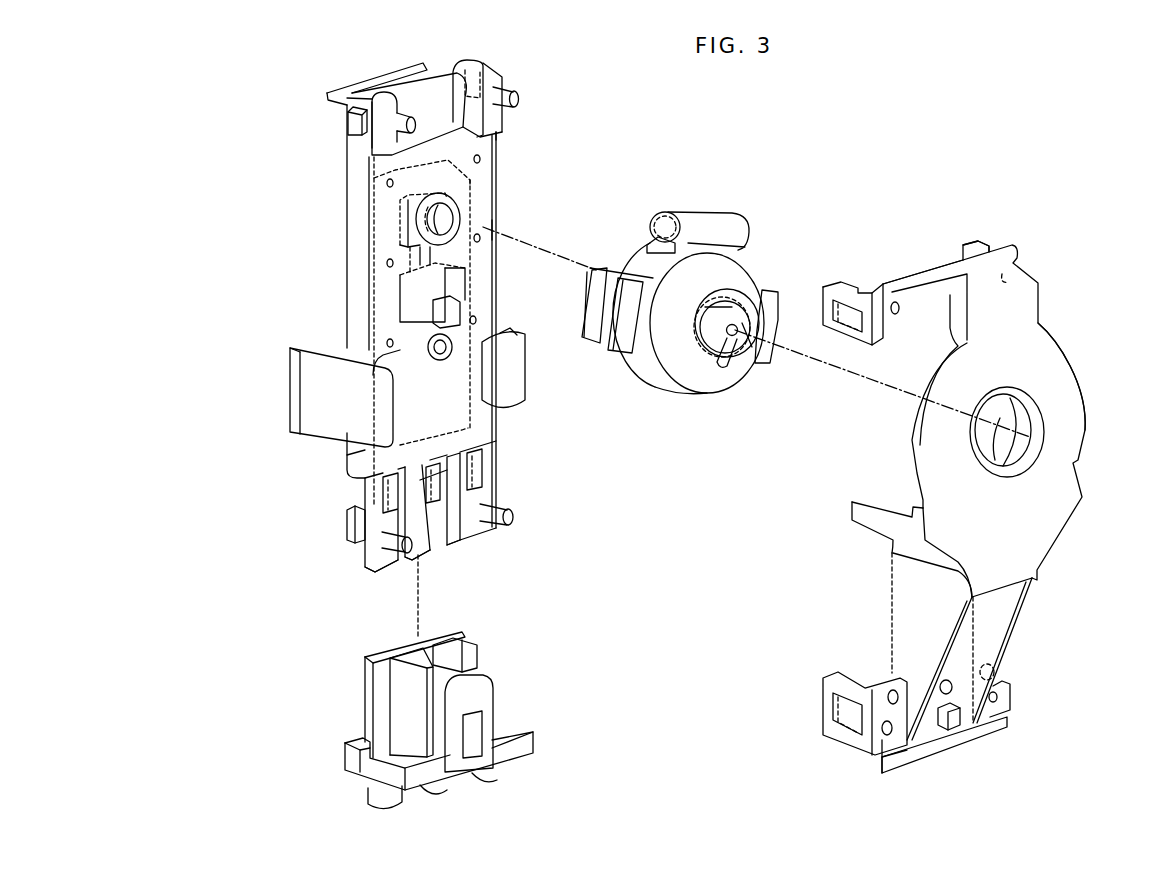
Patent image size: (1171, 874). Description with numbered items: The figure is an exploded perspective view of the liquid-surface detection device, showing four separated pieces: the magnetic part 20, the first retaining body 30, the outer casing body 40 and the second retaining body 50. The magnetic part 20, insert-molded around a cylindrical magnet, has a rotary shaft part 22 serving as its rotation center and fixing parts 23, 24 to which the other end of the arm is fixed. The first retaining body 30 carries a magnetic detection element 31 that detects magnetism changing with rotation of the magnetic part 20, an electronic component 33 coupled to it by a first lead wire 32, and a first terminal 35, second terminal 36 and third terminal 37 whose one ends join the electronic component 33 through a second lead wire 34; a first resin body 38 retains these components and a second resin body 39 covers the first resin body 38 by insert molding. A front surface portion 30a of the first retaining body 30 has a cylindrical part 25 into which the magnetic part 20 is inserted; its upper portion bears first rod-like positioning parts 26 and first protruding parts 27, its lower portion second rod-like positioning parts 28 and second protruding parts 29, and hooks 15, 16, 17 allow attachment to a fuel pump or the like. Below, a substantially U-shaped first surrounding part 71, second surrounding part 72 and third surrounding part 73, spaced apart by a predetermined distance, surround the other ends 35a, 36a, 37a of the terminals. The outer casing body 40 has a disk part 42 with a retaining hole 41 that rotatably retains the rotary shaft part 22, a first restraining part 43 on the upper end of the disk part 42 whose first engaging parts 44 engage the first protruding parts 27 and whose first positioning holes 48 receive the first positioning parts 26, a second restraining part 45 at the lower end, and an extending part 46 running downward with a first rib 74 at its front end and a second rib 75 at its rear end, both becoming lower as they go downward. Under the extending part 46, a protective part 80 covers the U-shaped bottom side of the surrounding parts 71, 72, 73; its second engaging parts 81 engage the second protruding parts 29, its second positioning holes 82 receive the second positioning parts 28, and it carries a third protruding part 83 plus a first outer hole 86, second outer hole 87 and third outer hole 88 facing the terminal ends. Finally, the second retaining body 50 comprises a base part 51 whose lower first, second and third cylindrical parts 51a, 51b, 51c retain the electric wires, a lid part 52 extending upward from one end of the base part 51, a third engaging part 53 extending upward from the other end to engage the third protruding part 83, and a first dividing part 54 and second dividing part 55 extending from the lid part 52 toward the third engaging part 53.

The hook 15 is at (383, 73).
The hook 16 is at (312, 401).
The hook 17 is at (503, 334).
The magnetic part 20 is at (756, 200).
The rotary shaft part 22 is at (742, 348).
The fixing part 23 is at (706, 215).
The fixing part 24 is at (592, 343).
The cylindrical part 25 is at (460, 215).
The first rod-like positioning part 26 is at (517, 94).
The first protruding part 27 is at (487, 66).
The second rod-like positioning part 28 is at (512, 517).
The second protruding part 29 is at (352, 521).
The first retaining body 30 is at (297, 74).
The front surface portion 30a is at (488, 232).
The magnetic detection element 31 is at (402, 220).
The first lead wire 32 is at (410, 247).
The electronic component 33 is at (405, 285).
The second lead wire 34 is at (420, 363).
The first terminal 35 is at (347, 454).
The other end of first terminal 35a is at (385, 510).
The second terminal 36 is at (447, 450).
The other end of second terminal 36a is at (432, 548).
The third terminal 37 is at (462, 433).
The other end of third terminal 37a is at (468, 484).
The first resin body 38 is at (475, 174).
The second resin body 39 is at (500, 182).
The outer casing body 40 is at (1097, 243).
The retaining hole 41 is at (1030, 415).
The disk part 42 is at (1050, 362).
The first restraining part 43 is at (990, 285).
The first engaging part 44 is at (978, 243).
The second restraining part 45 is at (852, 508).
The extending part 46 is at (965, 640).
The first positioning hole 48 is at (1010, 275).
The second retaining body 50 is at (318, 746).
The base part 51 is at (355, 770).
The first cylindrical part 51a is at (385, 800).
The second cylindrical part 51b is at (440, 795).
The third cylindrical part 51c is at (483, 786).
The lid part 52 is at (380, 652).
The third engaging part 53 is at (480, 700).
The first dividing part 54 is at (405, 690).
The second dividing part 55 is at (462, 655).
The first surrounding part 71 is at (385, 573).
The second surrounding part 72 is at (433, 562).
The third surrounding part 73 is at (487, 548).
The first rib 74 is at (968, 605).
The second rib 75 is at (1030, 595).
The protective part 80 is at (930, 740).
The second engaging part 81 is at (1003, 697).
The second positioning hole 82 is at (1005, 715).
The third protruding part 83 is at (950, 730).
The first outer hole 86 is at (897, 697).
The second outer hole 87 is at (955, 695).
The third outer hole 88 is at (996, 672).